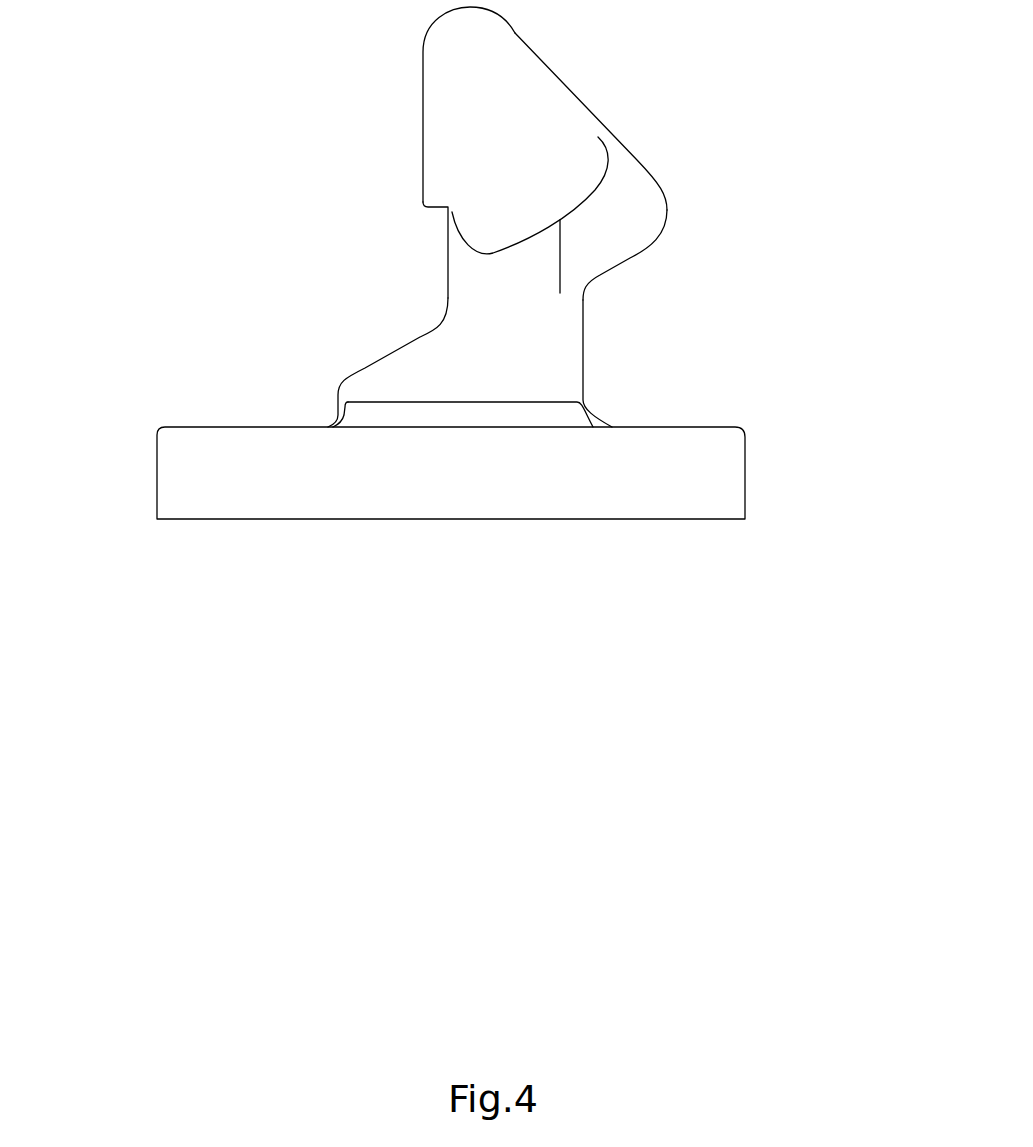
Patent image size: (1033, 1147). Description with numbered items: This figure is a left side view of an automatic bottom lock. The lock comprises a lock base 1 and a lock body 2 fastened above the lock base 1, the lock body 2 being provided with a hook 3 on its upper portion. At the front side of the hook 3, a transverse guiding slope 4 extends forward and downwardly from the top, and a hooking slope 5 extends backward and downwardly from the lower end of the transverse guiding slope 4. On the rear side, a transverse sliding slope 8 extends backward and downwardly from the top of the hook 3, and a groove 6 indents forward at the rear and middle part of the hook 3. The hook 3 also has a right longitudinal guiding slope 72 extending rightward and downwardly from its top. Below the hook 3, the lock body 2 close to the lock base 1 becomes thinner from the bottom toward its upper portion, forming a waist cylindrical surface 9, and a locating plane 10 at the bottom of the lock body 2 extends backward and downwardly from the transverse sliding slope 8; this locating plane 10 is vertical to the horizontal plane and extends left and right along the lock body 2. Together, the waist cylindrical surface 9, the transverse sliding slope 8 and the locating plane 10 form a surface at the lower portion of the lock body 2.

The lock base 1 is at (183, 468).
The lock body 2 is at (212, 325).
The hook 3 is at (363, 161).
The transverse guiding slope 4 is at (552, 70).
The right longitudinal guiding slope 72 is at (502, 110).
The groove 6 is at (448, 207).
The hooking slope 5 is at (622, 265).
The transverse sliding slope 8 is at (407, 343).
The waist cylindrical surface 9 is at (495, 377).
The locating plane 10 is at (340, 415).